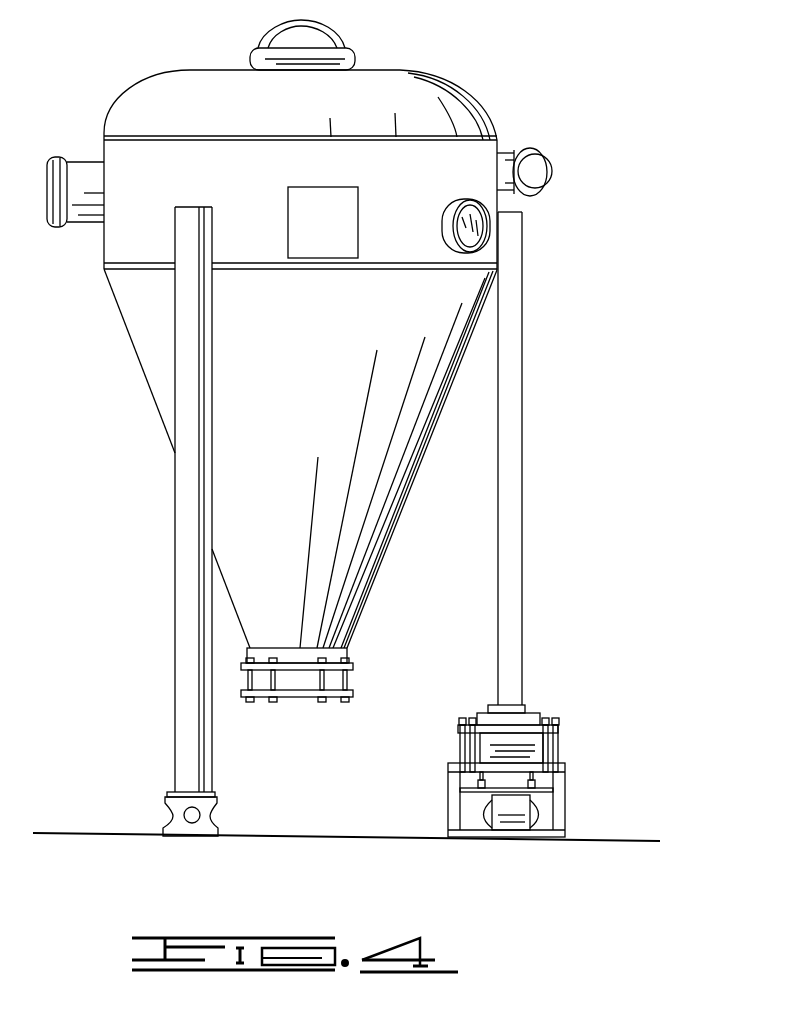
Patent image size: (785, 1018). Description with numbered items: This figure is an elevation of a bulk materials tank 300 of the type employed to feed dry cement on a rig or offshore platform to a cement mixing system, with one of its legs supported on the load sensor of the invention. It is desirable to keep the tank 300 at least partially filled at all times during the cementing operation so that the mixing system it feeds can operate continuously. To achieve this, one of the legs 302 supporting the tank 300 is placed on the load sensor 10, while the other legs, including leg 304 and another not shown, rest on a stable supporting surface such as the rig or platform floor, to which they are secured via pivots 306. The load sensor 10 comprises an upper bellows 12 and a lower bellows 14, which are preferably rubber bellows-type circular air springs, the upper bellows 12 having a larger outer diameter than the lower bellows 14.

The bulk materials tank 300 is at (392, 87).
The leg 302 is at (510, 465).
The leg 304 is at (187, 588).
The pivot 306 is at (175, 810).
The load sensor 10 is at (525, 771).
The upper bellows 12 is at (490, 737).
The lower bellows 14 is at (510, 810).